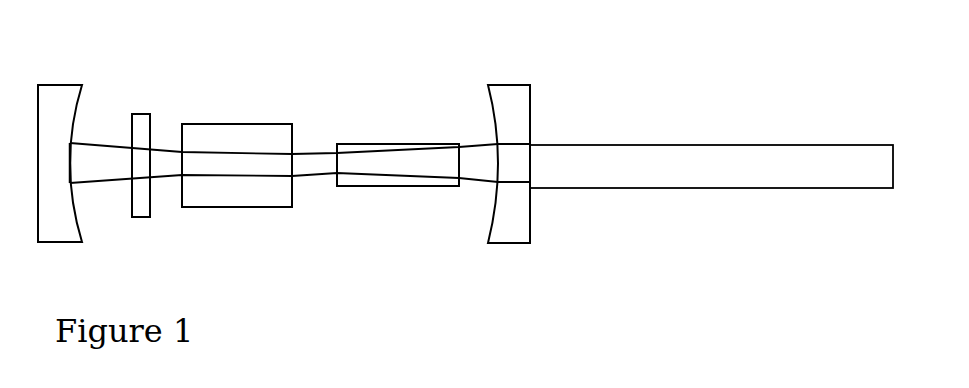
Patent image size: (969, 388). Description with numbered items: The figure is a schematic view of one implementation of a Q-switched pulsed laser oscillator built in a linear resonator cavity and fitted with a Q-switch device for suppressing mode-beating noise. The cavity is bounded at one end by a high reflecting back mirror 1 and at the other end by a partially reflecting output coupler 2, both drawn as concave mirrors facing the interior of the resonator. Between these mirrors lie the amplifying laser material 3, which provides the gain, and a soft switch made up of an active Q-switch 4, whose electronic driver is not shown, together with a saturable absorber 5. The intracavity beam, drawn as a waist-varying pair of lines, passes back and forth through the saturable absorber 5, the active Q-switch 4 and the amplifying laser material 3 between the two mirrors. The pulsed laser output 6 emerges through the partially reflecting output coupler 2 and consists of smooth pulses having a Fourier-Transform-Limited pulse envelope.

The high reflecting back mirror 1 is at (50, 90).
The partially reflecting output coupler 2 is at (490, 87).
The amplifying laser material 3 is at (337, 148).
The active Q-switch 4 is at (202, 130).
The saturable absorber 5 is at (130, 117).
The pulsed laser output 6 is at (600, 150).